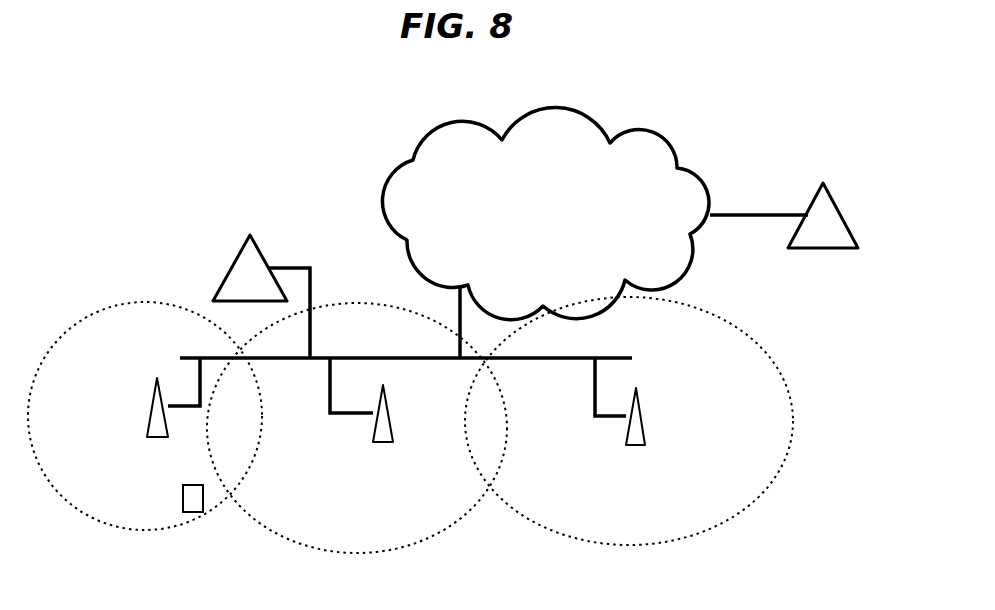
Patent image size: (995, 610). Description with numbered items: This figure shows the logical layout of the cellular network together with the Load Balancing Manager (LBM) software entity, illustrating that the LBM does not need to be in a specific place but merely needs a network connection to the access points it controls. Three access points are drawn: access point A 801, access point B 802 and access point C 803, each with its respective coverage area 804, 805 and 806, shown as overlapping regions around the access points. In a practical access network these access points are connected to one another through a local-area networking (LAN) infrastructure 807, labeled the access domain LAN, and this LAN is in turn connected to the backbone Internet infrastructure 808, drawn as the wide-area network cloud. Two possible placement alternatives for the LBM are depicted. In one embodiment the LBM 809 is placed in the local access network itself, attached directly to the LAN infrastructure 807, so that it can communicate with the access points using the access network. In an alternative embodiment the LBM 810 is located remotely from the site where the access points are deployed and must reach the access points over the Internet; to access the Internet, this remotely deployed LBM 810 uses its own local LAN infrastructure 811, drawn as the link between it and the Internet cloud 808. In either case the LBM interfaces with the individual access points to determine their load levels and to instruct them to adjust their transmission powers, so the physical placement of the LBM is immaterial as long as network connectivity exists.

The access point A 801 is at (147, 413).
The access point B 802 is at (388, 412).
The access point C 803 is at (640, 420).
The coverage area 804 is at (75, 325).
The coverage area 805 is at (458, 520).
The coverage area 806 is at (720, 316).
The local-area networking (LAN) infrastructure 807 is at (366, 356).
The backbone Internet infrastructure 808 is at (422, 137).
The load balancing manager (LBM) 809 is at (232, 265).
The load balancing manager (LBM) 810 is at (840, 213).
The local LAN infrastructure 811 is at (753, 213).